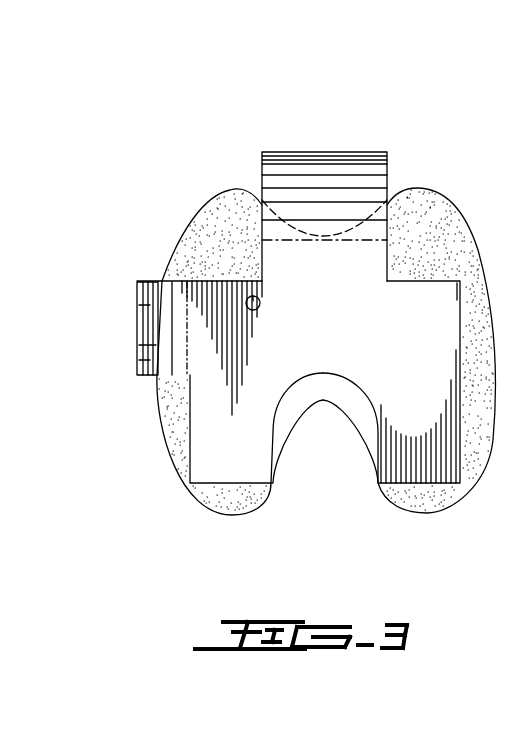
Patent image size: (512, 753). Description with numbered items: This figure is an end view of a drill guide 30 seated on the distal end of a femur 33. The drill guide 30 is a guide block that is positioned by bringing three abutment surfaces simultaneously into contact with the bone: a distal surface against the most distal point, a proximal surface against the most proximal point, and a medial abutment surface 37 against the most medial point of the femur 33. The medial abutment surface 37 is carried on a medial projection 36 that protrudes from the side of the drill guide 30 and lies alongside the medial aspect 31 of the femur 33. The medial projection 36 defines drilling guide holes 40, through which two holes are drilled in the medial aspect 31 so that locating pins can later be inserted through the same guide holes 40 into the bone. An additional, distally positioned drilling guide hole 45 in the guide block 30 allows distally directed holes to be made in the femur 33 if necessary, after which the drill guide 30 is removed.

The drill guide 30 is at (322, 132).
The medial aspect 31 is at (173, 397).
The femur 33 is at (419, 189).
The medial projection 36 is at (137, 327).
The medial abutment surface 37 is at (153, 375).
The drilling guide holes 40 is at (143, 278).
The distally positioned drilling guide hole 45 is at (256, 281).